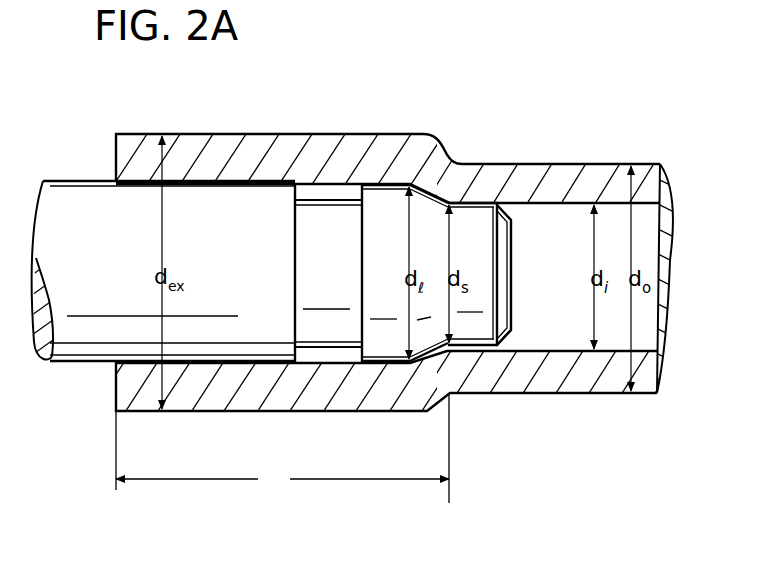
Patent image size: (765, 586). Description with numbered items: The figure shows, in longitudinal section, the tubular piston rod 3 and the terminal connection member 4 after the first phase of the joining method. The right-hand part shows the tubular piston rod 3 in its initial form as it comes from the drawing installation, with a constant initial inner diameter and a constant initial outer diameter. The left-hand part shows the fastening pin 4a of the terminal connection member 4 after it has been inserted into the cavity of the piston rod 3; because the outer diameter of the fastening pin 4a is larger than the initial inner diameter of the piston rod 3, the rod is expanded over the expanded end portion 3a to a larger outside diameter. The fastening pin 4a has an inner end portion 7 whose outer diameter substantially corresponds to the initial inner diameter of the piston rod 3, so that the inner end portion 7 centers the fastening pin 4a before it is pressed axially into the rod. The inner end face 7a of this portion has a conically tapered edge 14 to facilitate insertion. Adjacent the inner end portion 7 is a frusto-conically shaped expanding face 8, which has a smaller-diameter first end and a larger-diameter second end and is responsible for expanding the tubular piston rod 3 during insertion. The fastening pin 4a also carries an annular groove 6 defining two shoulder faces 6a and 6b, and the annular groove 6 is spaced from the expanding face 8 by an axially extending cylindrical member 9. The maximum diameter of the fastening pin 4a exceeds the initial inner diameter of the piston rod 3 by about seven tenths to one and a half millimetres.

The tubular piston rod 3 is at (602, 185).
The expanded end portion 3a is at (282, 449).
The terminal connection member 4 is at (73, 193).
The fastening pin 4a is at (228, 205).
The annular groove 6 is at (328, 353).
The shoulder face 6a is at (302, 191).
The shoulder face 6b is at (356, 191).
The inner end portion 7 is at (484, 222).
The inner end face 7a is at (513, 233).
The expanding face 8 is at (432, 189).
The cylindrical member 9 is at (385, 213).
The conically tapered edge 14 is at (513, 302).